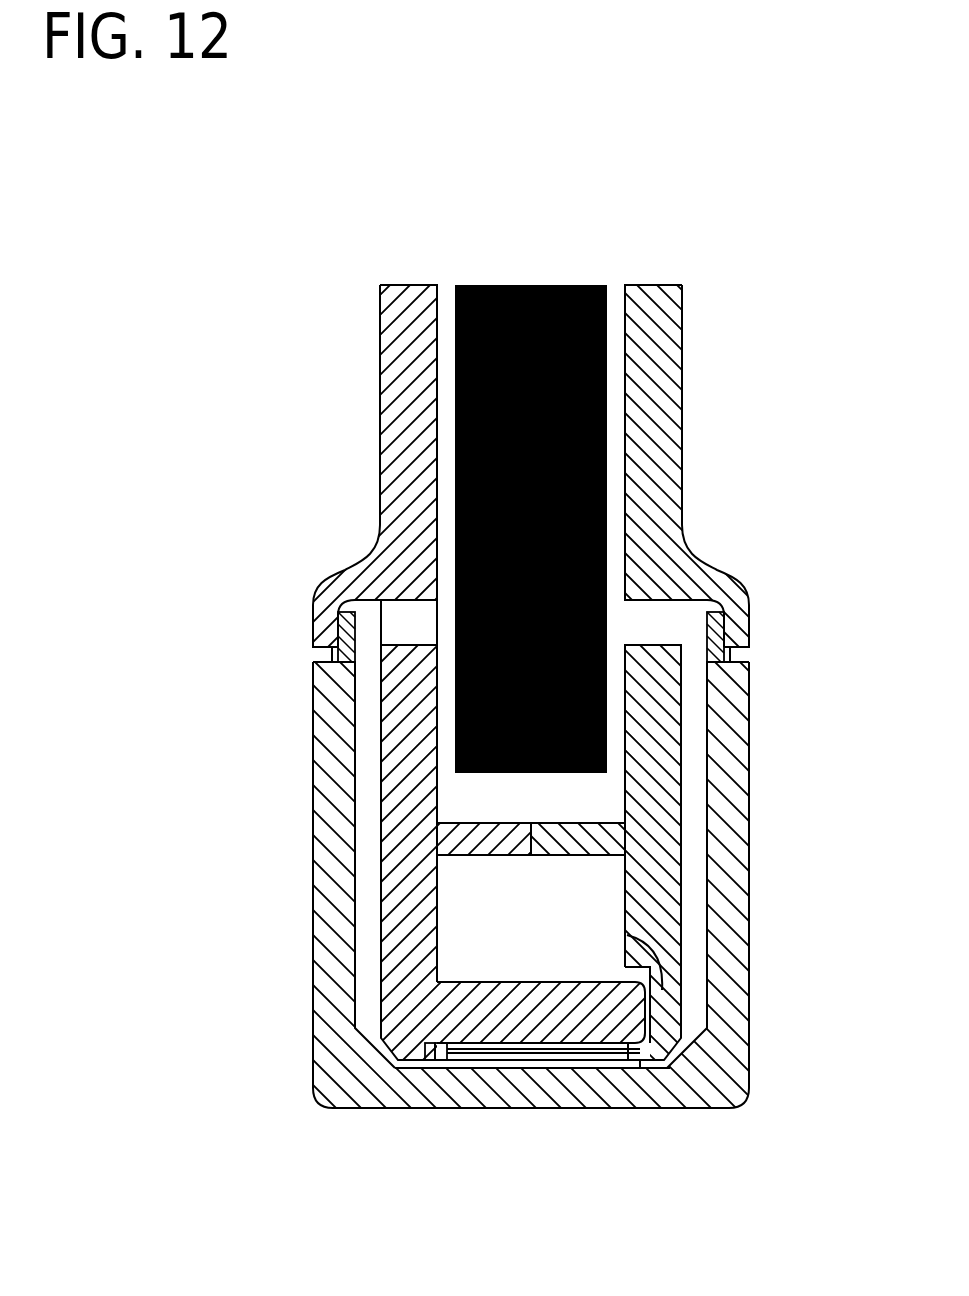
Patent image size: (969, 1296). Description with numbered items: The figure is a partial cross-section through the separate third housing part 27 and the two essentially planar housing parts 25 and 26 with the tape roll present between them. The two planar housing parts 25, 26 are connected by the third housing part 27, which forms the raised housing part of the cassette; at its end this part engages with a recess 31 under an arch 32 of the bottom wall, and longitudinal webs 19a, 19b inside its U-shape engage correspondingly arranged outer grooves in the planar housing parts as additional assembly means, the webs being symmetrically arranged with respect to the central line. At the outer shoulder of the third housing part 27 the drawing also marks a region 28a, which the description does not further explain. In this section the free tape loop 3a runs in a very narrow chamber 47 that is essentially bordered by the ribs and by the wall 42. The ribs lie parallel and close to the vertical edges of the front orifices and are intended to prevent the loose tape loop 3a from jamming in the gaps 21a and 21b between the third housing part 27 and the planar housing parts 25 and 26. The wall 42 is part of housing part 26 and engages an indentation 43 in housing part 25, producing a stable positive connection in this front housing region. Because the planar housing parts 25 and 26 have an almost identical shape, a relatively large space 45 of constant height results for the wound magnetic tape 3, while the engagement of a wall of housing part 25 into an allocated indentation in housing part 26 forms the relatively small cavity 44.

The planar housing part 26 is at (395, 483).
The planar housing part 25 is at (662, 527).
The magnetic tape 3 is at (607, 480).
The arch 32 is at (740, 605).
The recess 31 is at (745, 648).
The gap between cap and housing 28a is at (298, 633).
The longitudinal web 19a is at (365, 838).
The longitudinal web 19b is at (692, 843).
The space 45 is at (537, 808).
The cavity 44 is at (543, 971).
The wall 42 is at (448, 1005).
The indentation 43 is at (646, 986).
The third housing part 27 is at (717, 1070).
The gap 21b is at (413, 1070).
The chamber 47 is at (443, 1048).
The tape loop 3a is at (480, 1050).
The gap 21a is at (650, 1068).